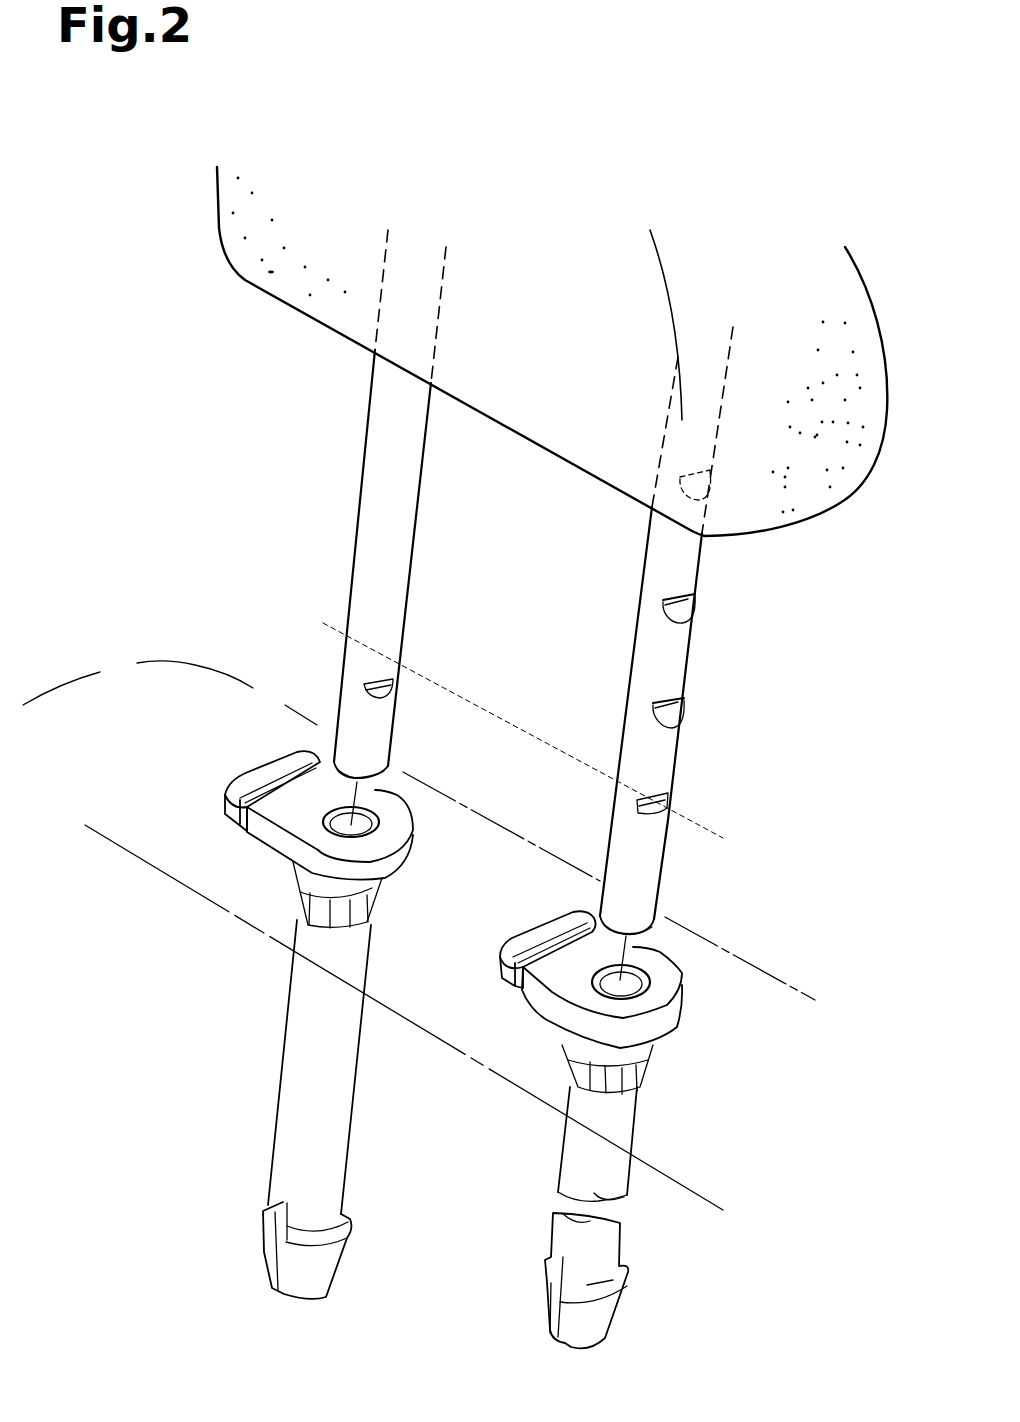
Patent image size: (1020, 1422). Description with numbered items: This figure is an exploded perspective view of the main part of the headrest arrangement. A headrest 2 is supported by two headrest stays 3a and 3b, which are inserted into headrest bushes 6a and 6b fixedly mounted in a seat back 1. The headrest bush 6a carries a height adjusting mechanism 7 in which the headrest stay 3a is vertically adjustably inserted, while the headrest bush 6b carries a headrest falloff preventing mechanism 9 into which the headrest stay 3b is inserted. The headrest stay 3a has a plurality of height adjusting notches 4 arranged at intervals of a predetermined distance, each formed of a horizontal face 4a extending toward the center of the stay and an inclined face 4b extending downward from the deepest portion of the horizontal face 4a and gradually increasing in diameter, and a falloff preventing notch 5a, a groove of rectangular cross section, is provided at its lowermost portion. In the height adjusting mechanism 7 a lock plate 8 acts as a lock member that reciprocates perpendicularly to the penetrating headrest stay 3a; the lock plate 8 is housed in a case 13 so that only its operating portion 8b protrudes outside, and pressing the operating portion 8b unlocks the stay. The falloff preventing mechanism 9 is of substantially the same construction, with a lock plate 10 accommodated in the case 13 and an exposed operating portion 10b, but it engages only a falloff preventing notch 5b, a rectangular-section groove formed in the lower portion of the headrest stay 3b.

The seat back 1 is at (170, 658).
The headrest 2 is at (800, 440).
The headrest stay 3a is at (671, 653).
The headrest stay 3b is at (359, 527).
The height adjusting notches 4 is at (740, 614).
The horizontal face 4a is at (690, 612).
The inclined face 4b is at (687, 650).
The falloff preventing notch 5a is at (680, 815).
The falloff preventing notch 5b is at (394, 693).
The headrest bush 6a is at (617, 1115).
The headrest bush 6b is at (313, 1038).
The height adjusting mechanism 7 is at (607, 942).
The lock plate 8 is at (522, 889).
The operating portion 8b is at (525, 940).
The headrest falloff preventing mechanism 9 is at (229, 758).
The lock plate 10 is at (225, 710).
The operating portion 10b is at (277, 766).
The case 13 is at (283, 845).